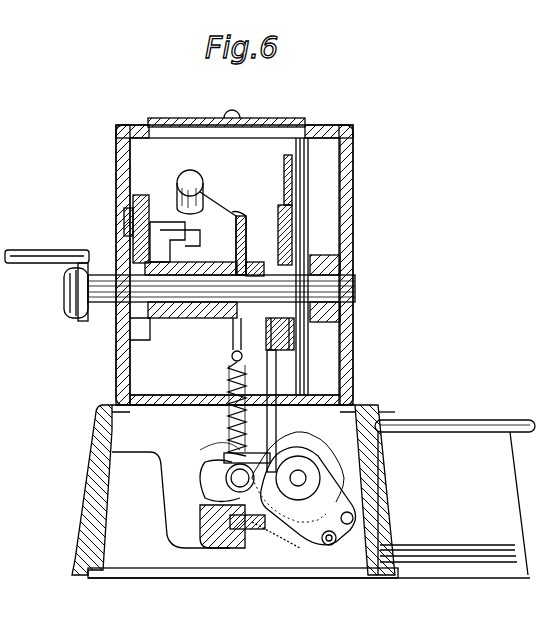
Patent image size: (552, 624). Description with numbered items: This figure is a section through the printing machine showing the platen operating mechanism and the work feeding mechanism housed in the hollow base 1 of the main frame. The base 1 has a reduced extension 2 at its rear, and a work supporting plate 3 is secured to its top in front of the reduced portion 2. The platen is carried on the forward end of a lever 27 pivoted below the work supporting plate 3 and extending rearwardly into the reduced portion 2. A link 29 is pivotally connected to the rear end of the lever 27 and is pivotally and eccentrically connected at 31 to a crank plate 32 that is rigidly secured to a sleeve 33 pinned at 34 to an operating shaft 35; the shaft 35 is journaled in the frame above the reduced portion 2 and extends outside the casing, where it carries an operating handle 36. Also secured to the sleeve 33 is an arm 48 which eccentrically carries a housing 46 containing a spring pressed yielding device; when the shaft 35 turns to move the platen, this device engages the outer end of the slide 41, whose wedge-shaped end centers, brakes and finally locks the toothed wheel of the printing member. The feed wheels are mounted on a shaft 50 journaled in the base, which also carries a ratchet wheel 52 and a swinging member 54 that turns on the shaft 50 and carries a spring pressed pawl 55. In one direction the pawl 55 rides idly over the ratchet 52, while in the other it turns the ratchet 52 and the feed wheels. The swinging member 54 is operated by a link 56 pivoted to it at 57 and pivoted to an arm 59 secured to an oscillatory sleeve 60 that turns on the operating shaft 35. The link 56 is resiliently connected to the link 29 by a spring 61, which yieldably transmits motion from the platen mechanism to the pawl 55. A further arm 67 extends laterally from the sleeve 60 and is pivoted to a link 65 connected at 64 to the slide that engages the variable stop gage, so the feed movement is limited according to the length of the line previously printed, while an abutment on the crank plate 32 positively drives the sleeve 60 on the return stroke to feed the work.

The hollow base 1 is at (498, 480).
The reduced extension 2 is at (97, 490).
The work supporting plate 3 is at (452, 424).
The lever 27 is at (182, 520).
The link 29 is at (274, 388).
The pivotal connection 31 is at (295, 334).
The crank plate 32 is at (280, 224).
The sleeve 33 is at (252, 262).
The pin 34 is at (266, 266).
The operating shaft 35 is at (326, 294).
The operating handle 36 is at (44, 252).
The slide 41 is at (186, 240).
The housing 46 is at (196, 178).
The arm 48 is at (240, 216).
The shaft 50 is at (404, 416).
The ratchet wheel 52 is at (298, 478).
The swinging member 54 is at (335, 510).
The pawl 55 is at (314, 538).
The link 56 is at (227, 390).
The pivotal connection 57 is at (226, 478).
The arm 59 is at (230, 342).
The oscillatory sleeve 60 is at (186, 316).
The spring 61 is at (228, 430).
The pivotal connection 64 is at (148, 210).
The link 65 is at (126, 222).
The arm 67 is at (124, 248).